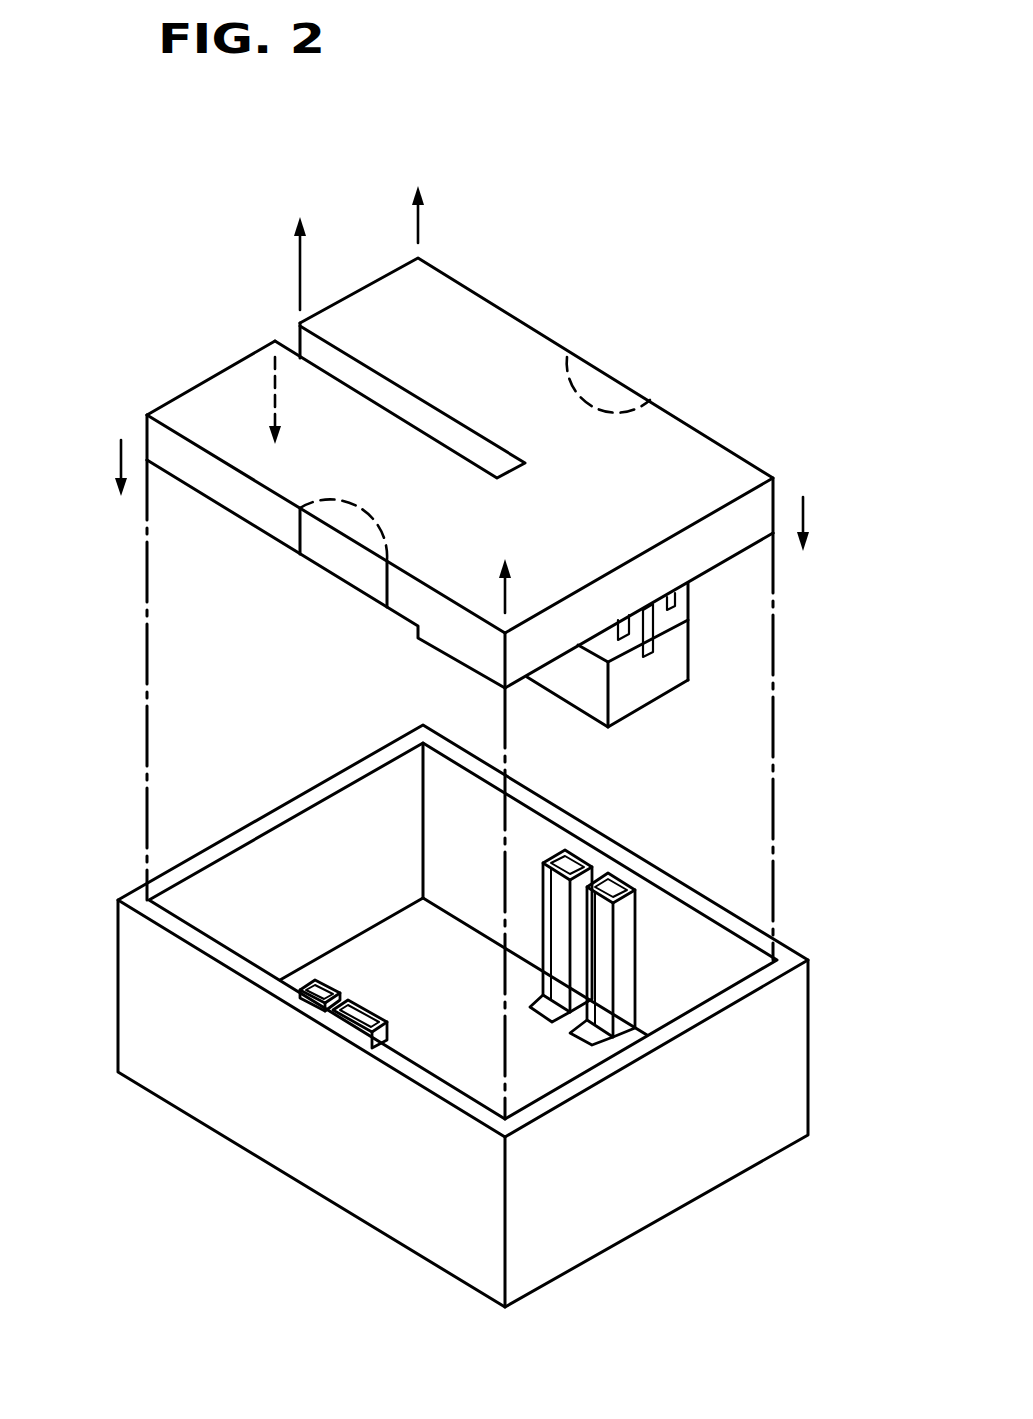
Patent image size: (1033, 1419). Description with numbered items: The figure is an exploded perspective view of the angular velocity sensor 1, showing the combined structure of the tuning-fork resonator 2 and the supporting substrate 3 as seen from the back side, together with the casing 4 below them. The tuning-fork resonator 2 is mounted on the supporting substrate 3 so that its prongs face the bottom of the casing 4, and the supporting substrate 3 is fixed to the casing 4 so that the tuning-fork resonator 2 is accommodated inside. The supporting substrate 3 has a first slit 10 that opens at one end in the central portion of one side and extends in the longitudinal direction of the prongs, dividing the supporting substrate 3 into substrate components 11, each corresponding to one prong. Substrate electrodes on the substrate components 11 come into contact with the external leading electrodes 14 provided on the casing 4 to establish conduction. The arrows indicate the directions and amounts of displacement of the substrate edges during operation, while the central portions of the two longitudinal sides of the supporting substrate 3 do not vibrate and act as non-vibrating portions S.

The angular velocity sensor 1 is at (122, 577).
The tuning-fork resonator 2 is at (690, 663).
The supporting substrate 3 is at (507, 313).
The casing 4 is at (327, 780).
The first slit 10 is at (288, 337).
The substrate components 11 is at (253, 408).
The external leading electrodes 14 is at (367, 1013).
The non-vibrating portions (nodes) S is at (613, 367).